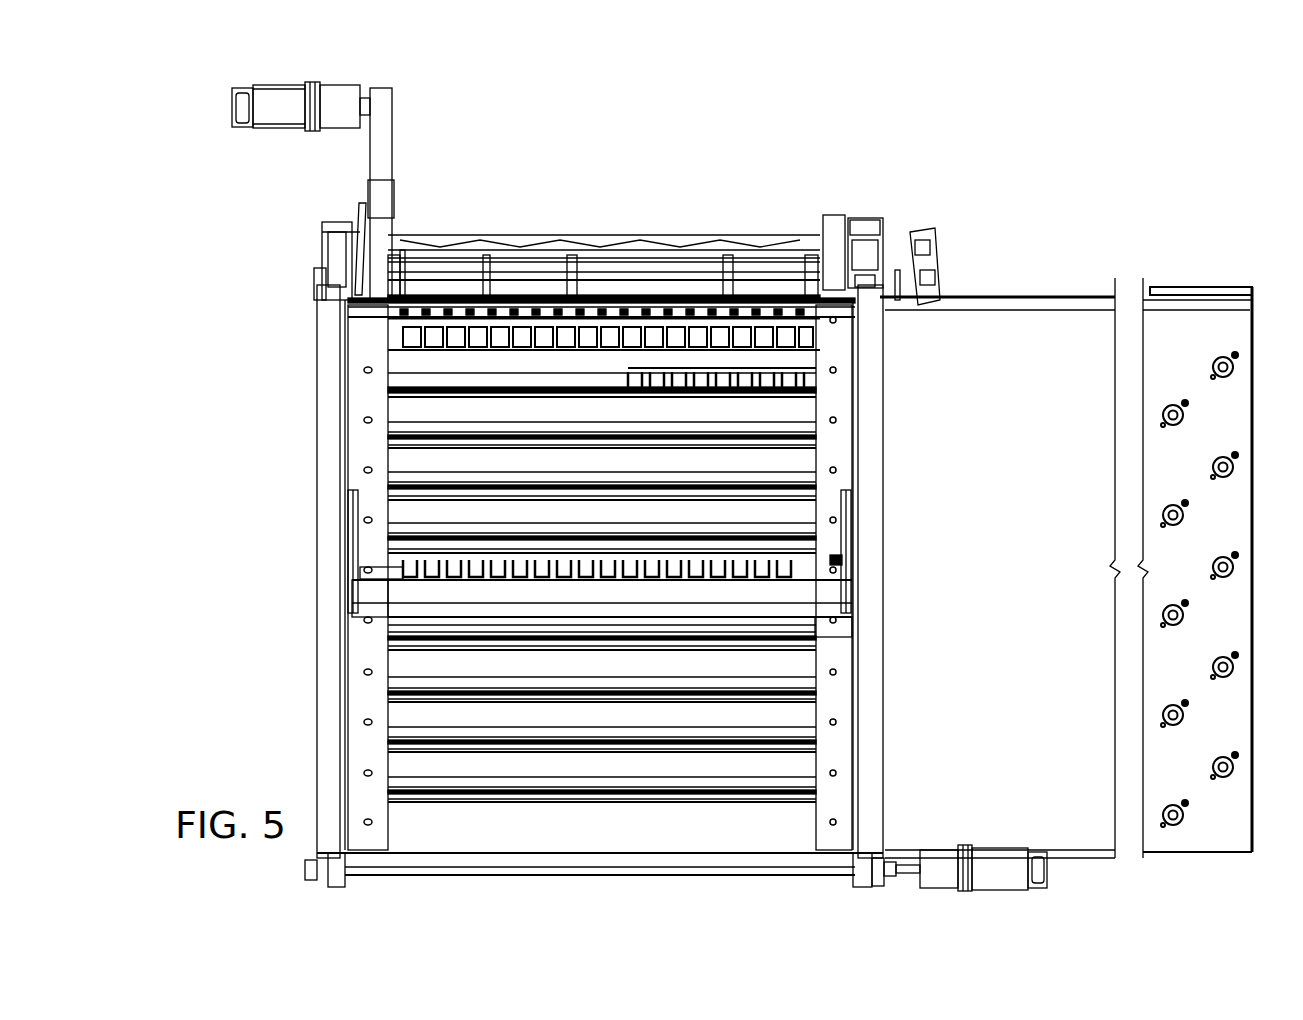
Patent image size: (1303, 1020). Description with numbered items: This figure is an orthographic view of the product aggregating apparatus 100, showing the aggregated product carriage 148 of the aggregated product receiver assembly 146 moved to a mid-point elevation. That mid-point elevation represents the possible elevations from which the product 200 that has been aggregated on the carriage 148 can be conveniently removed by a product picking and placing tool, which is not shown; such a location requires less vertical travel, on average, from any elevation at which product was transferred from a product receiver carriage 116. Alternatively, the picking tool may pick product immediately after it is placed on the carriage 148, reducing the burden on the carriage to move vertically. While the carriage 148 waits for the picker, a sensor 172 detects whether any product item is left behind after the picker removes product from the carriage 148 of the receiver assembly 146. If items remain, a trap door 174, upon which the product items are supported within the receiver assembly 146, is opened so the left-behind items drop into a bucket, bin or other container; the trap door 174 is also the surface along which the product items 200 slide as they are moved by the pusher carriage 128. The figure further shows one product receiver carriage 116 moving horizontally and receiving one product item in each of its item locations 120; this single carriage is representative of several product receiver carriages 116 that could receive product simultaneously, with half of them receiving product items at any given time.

The product aggregating apparatus 100 is at (1048, 148).
The pusher carriage 128 is at (682, 192).
The aggregated product receiver assembly 146 is at (287, 340).
The sensor 172 is at (838, 560).
The product 200 is at (698, 378).
The item locations 120 is at (647, 370).
The product receiver carriage 116 is at (627, 387).
The aggregated product carriage 148 is at (352, 525).
The trap door 174 is at (368, 572).